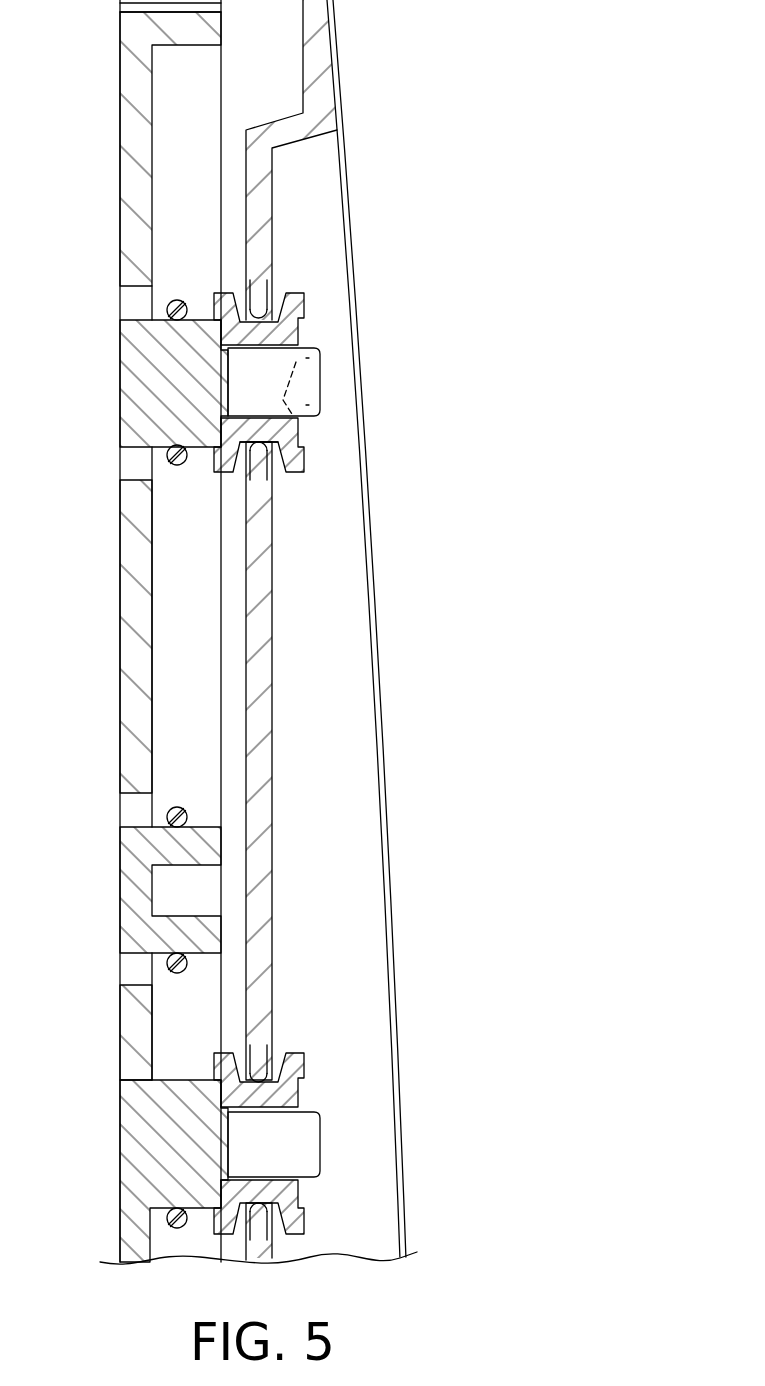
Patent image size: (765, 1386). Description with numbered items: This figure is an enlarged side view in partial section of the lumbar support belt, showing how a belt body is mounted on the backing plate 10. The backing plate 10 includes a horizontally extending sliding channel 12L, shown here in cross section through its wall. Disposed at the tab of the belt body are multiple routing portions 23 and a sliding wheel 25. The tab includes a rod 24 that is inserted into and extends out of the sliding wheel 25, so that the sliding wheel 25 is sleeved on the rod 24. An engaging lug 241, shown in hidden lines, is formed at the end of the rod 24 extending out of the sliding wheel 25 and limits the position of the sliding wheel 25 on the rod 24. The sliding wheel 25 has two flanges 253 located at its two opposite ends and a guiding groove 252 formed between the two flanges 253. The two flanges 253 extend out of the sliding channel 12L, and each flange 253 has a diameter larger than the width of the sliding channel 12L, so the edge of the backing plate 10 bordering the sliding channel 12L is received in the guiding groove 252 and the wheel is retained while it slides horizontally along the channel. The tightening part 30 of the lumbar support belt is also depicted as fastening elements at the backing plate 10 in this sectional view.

The backing plate 10 is at (280, 717).
The sliding channel 12L is at (263, 318).
The routing portion 23 is at (198, 847).
The rod 24 is at (323, 348).
The engaging lug 241 is at (310, 427).
The sliding wheel 25 is at (317, 463).
The guiding groove 252 is at (280, 443).
The flange 253 is at (298, 293).
The tightening part 30 is at (162, 312).